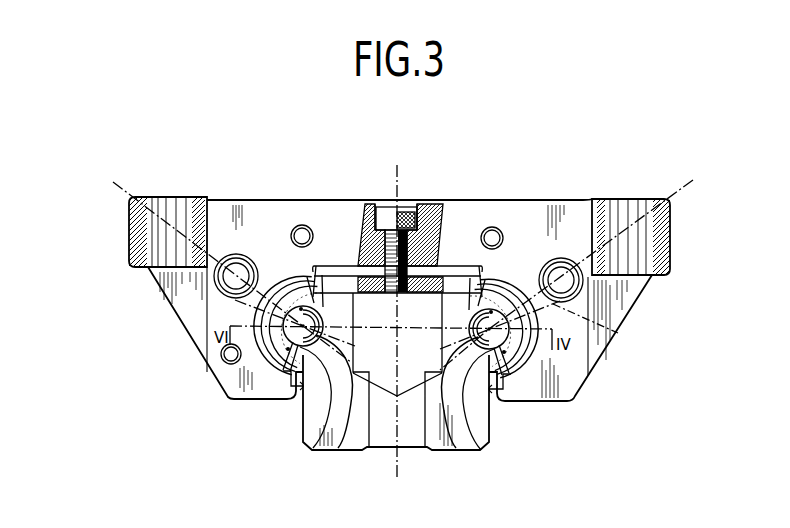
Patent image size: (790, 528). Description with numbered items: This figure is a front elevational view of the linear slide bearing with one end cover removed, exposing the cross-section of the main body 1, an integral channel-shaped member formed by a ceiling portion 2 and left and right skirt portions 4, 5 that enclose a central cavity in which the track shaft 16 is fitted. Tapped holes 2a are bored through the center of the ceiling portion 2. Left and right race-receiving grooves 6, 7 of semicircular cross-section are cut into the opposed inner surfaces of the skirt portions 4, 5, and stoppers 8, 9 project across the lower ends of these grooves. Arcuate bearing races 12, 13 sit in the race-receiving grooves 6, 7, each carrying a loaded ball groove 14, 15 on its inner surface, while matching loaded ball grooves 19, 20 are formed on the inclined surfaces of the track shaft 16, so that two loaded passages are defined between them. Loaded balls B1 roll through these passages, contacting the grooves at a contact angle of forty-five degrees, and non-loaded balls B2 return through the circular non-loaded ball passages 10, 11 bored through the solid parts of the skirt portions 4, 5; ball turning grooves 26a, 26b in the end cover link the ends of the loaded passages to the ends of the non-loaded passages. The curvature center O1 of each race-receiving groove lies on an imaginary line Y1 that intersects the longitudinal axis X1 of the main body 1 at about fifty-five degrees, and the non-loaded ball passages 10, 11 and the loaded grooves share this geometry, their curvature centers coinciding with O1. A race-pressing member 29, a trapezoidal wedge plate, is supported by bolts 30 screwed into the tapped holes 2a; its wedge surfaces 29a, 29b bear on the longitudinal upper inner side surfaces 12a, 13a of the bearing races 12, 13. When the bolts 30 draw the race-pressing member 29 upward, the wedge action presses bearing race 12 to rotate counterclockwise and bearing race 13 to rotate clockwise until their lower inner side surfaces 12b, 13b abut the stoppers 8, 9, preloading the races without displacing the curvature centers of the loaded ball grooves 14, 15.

The main body 1 is at (585, 198).
The ceiling portion 2 is at (467, 208).
The tapped holes 2a is at (388, 228).
The left skirt portion 4 is at (212, 318).
The right skirt portion 5 is at (583, 357).
The left race-receiving groove 6 is at (238, 397).
The right race-receiving groove 7 is at (546, 360).
The left stopper 8 is at (302, 391).
The right stopper 9 is at (496, 399).
The left non-loaded ball passage 10 is at (233, 253).
The right non-loaded ball passage 11 is at (566, 259).
The left bearing race 12 is at (282, 262).
The longitudinal upper inner side surface of left bearing race 12a is at (328, 298).
The longitudinal lower inner side surface of left bearing race 12b is at (301, 357).
The right bearing race 13 is at (495, 315).
The longitudinal upper inner side surface of right bearing race 13a is at (467, 299).
The longitudinal lower inner side surface of right bearing race 13b is at (494, 359).
The loaded ball groove of left bearing race 14 is at (302, 300).
The loaded ball groove of right bearing race 15 is at (516, 270).
The track shaft 16 is at (362, 436).
The loaded ball groove of track shaft (left) 19 is at (342, 449).
The loaded ball groove of track shaft (right) 20 is at (463, 448).
The ball turning groove 26a is at (224, 359).
The ball turning groove 26b is at (615, 332).
The race-pressing member 29 is at (352, 258).
The wedge surface 29a is at (315, 274).
The wedge surface 29b is at (482, 273).
The bolts 30 is at (431, 228).
The longitudinal axis of main body X1 is at (412, 322).
The imaginary line Y1 is at (408, 265).
The loaded balls B1 is at (296, 342).
The non-loaded balls B2 is at (224, 283).
The curvature center of race-receiving groove O1 is at (301, 393).